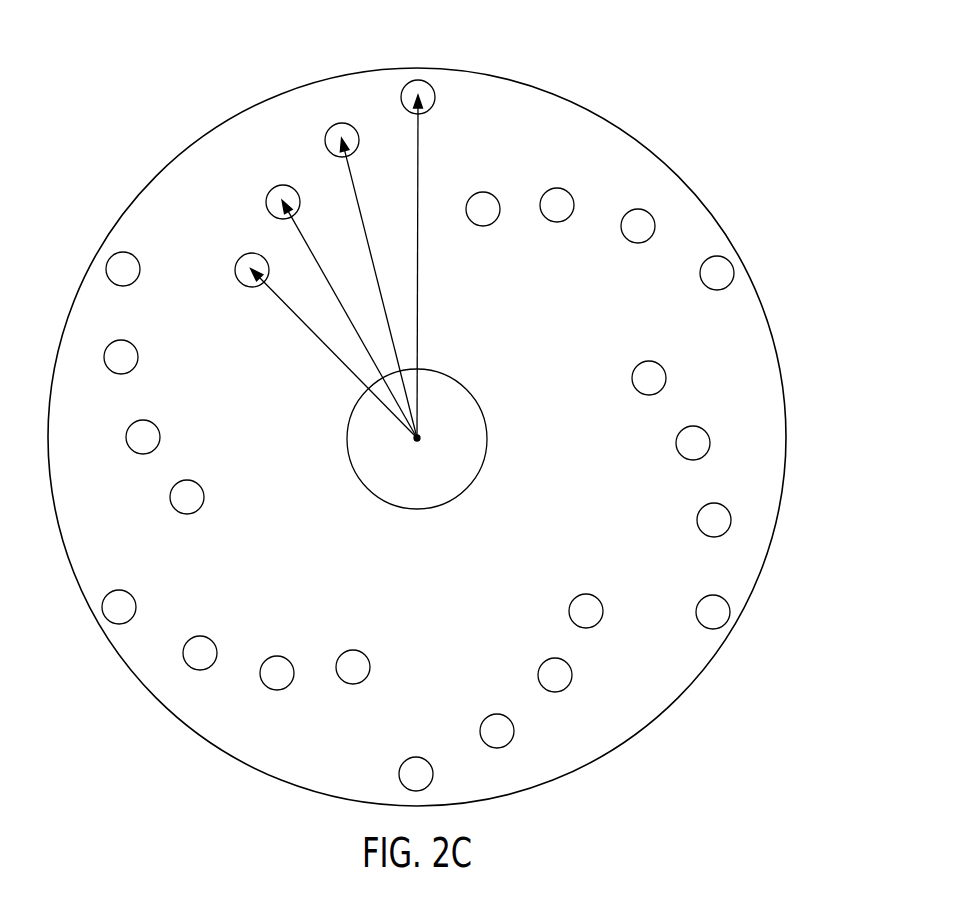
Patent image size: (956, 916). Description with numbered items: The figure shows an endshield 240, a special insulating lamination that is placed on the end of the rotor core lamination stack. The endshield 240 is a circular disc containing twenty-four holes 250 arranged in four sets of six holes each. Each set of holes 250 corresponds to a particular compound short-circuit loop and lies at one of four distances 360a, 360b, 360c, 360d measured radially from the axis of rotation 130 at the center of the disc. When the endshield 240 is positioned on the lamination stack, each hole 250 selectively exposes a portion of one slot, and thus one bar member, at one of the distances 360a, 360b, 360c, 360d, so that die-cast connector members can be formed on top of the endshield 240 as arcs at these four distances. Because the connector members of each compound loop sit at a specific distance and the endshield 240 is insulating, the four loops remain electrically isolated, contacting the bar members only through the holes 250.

The endshield 240 is at (772, 119).
The holes 250 is at (559, 200).
The axis of rotation 130 is at (417, 438).
The distance 360a is at (302, 322).
The distance 360b is at (312, 255).
The distance 360c is at (361, 220).
The distance 360d is at (414, 163).